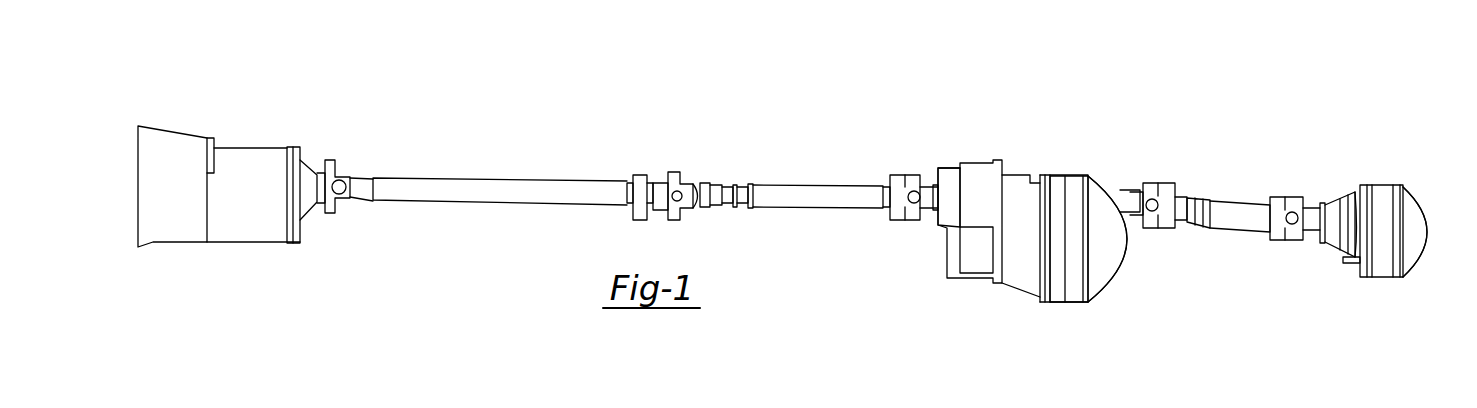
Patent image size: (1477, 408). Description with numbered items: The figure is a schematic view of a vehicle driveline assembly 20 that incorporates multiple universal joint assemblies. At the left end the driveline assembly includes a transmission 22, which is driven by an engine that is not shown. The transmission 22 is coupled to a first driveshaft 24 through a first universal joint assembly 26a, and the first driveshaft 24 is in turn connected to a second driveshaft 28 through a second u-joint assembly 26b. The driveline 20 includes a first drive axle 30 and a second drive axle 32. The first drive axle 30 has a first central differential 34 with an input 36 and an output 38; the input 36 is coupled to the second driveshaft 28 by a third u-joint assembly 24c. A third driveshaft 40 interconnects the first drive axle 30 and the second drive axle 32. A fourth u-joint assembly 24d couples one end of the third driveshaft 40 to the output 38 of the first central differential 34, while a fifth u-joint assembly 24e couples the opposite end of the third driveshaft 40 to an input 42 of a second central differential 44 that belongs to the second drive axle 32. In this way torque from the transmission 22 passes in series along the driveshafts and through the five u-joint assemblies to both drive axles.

The vehicle driveline assembly 20 is at (794, 128).
The transmission 22 is at (235, 158).
The first driveshaft 24 is at (422, 178).
The third u-joint assembly 24c is at (917, 190).
The fourth u-joint assembly 24d is at (1156, 197).
The fifth u-joint assembly 24e is at (1296, 208).
The first universal joint assembly 26a is at (348, 173).
The second u-joint assembly 26b is at (679, 191).
The second driveshaft 28 is at (835, 209).
The first drive axle 30 is at (1012, 310).
The second drive axle 32 is at (1368, 288).
The first central differential 34 is at (1060, 178).
The input 36 is at (950, 215).
The output 38 is at (1110, 183).
The third driveshaft 40 is at (1237, 219).
The input 42 is at (1330, 244).
The second central differential 44 is at (1393, 247).